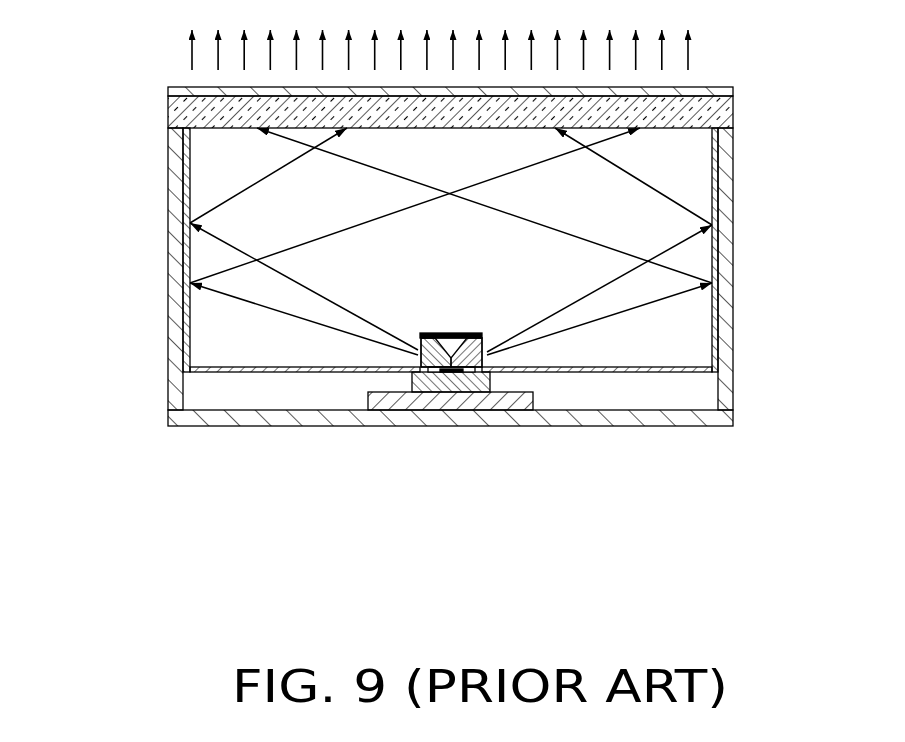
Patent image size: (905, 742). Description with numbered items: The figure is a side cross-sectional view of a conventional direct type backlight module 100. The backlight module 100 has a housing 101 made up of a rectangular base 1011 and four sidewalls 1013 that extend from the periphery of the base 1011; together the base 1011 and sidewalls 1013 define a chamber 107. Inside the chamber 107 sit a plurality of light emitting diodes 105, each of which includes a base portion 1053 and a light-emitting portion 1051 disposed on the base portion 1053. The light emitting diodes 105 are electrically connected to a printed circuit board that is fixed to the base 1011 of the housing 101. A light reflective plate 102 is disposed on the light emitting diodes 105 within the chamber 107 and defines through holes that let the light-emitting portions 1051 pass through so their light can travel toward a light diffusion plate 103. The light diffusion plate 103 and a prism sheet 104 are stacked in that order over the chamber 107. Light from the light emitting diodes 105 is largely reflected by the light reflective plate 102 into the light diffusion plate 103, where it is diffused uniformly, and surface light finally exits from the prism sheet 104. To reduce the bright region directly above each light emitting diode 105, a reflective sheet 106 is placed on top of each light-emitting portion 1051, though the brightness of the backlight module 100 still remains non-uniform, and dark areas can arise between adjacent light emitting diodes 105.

The backlight module 100 is at (150, 57).
The housing 101 is at (387, 295).
The base 1011 is at (411, 436).
The sidewalls 1013 is at (177, 315).
The light reflective plate 102 is at (650, 367).
The light diffusion plate 103 is at (725, 113).
The prism sheet 104 is at (700, 92).
The light emitting diodes 105 is at (438, 406).
The light-emitting portion 1051 is at (423, 372).
The base portion 1053 is at (445, 372).
The reflective sheet 106 is at (440, 334).
The chamber 107 is at (687, 320).